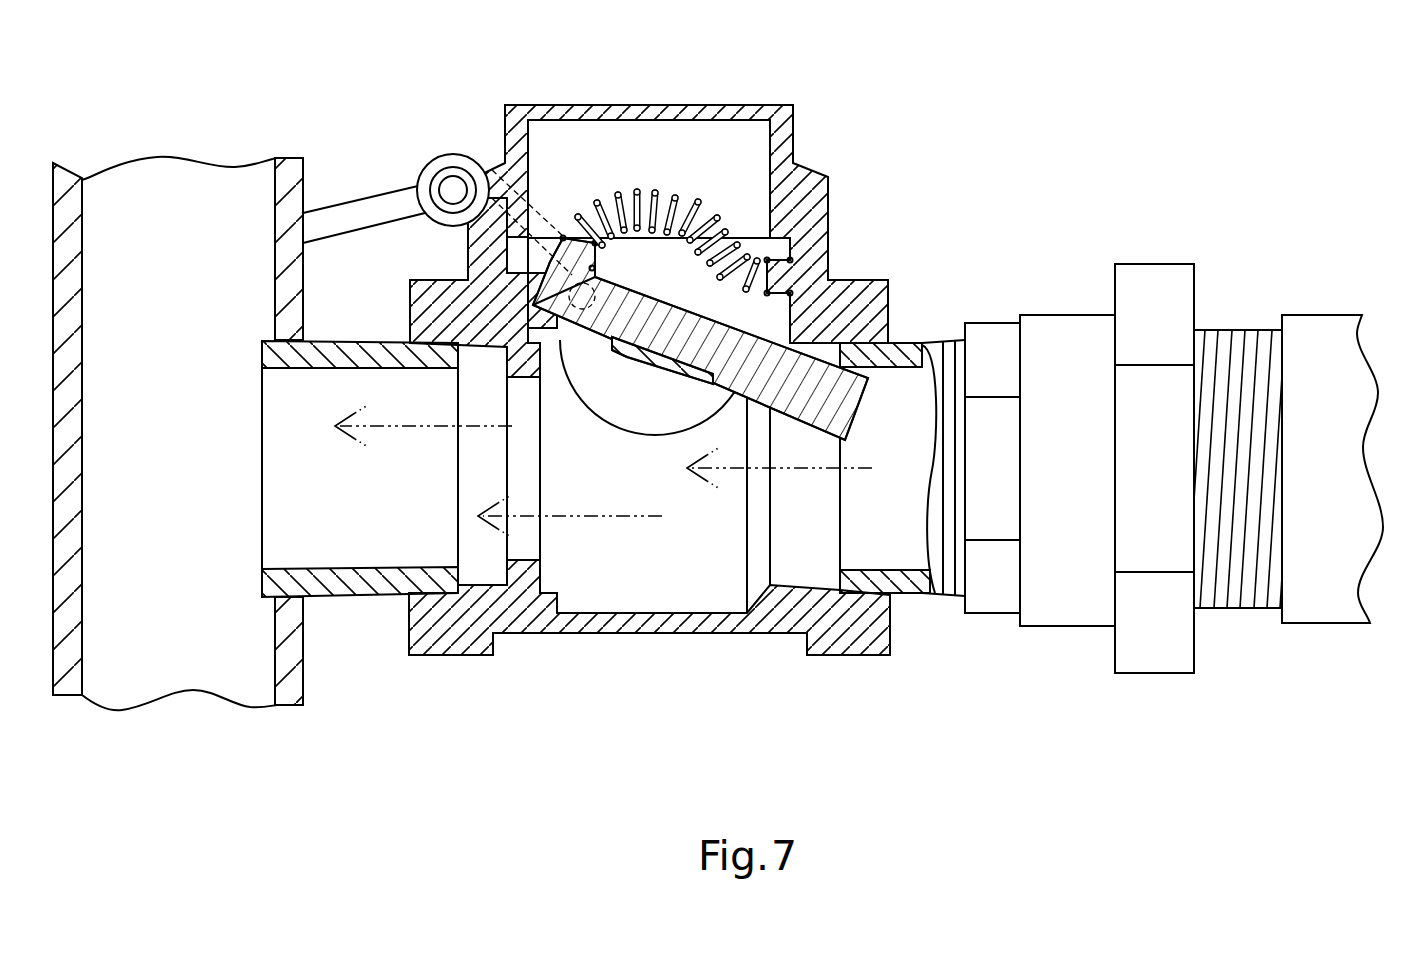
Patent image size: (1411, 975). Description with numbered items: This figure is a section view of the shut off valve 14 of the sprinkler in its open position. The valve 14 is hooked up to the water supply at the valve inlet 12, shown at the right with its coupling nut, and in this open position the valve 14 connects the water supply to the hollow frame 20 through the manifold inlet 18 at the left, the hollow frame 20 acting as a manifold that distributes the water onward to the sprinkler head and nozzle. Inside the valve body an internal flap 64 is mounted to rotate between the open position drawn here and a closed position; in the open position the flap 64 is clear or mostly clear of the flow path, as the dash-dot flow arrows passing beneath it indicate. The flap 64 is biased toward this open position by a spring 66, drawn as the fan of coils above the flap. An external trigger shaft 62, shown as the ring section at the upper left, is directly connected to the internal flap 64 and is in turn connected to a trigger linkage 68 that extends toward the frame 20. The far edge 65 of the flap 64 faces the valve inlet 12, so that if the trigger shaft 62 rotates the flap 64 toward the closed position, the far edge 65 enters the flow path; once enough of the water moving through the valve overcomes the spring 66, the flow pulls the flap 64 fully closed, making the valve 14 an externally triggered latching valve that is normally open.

The valve inlet 12 is at (1160, 278).
The shut off valve 14 is at (703, 633).
The manifold inlet 18 is at (360, 597).
The hollow frame 20 is at (182, 200).
The external trigger shaft 62 is at (453, 152).
The internal flap 64 is at (707, 395).
The far edge 65 is at (868, 392).
The spring 66 is at (654, 188).
The trigger linkage 68 is at (362, 207).